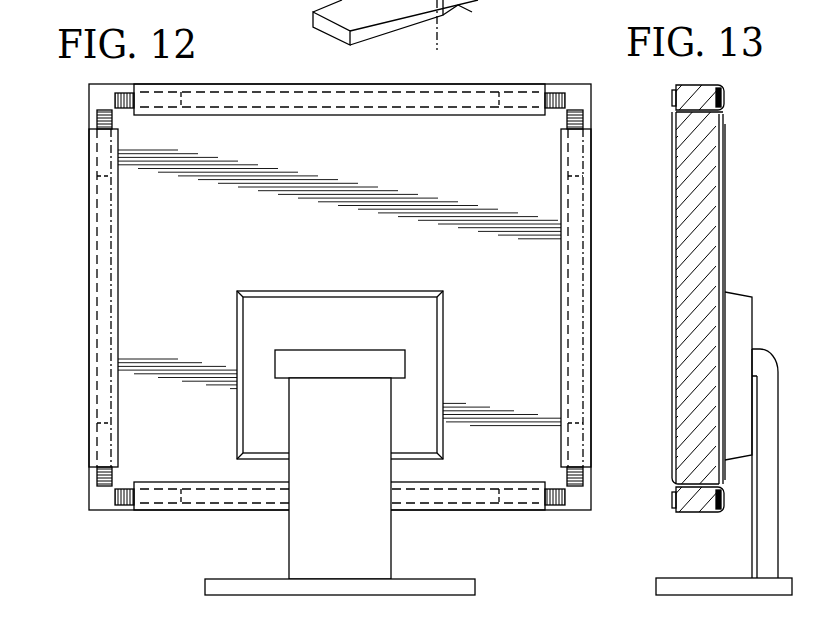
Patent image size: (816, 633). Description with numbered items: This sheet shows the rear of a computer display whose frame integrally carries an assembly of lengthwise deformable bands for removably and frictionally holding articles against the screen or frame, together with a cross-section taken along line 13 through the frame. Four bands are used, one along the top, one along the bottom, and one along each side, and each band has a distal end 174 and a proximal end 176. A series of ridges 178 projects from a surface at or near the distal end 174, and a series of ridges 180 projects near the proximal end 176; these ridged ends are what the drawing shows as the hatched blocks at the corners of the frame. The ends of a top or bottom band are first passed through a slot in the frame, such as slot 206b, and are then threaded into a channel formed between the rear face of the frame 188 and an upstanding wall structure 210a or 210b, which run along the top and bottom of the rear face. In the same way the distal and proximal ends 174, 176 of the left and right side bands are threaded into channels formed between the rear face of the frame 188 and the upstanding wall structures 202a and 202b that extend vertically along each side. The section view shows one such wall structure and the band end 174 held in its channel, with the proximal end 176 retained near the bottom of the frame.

In FIG. 12, the section line 13 is at (410, 24).
In FIG. 12, the distal end 174 is at (110, 148).
In FIG. 13, the distal end 174 is at (722, 119).
In FIG. 12, the proximal end 176 is at (103, 445).
In FIG. 13, the proximal end 176 is at (722, 470).
In FIG. 12, the ridges 178 is at (97, 112).
In FIG. 12, the ridges 180 is at (90, 476).
In FIG. 12, the rear face of the frame 188 is at (162, 318).
In FIG. 12, the upstanding wall structure 202a is at (583, 270).
In FIG. 12, the upstanding wall structure 202b is at (107, 276).
In FIG. 12, the slot 206b is at (400, 0).
In FIG. 12, the upstanding wall structure 210a is at (265, 100).
In FIG. 12, the upstanding wall structure 210b is at (222, 500).